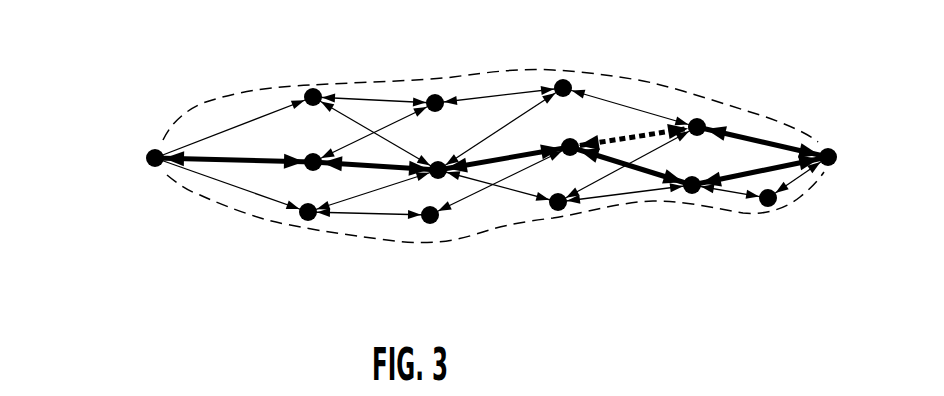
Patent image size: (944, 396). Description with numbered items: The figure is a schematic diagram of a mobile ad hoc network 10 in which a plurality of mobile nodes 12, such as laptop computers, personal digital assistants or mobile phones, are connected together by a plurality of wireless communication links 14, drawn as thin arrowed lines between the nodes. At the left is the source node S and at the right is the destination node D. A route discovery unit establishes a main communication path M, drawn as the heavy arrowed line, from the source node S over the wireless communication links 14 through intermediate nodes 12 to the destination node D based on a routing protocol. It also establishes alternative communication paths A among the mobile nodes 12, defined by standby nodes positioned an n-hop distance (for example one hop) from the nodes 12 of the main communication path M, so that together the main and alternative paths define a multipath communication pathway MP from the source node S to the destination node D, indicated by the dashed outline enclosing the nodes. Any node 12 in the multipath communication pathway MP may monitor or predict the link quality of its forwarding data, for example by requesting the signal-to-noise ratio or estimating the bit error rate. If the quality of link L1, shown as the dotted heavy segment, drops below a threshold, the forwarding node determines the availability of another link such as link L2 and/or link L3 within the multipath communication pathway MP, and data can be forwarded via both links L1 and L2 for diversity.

The mobile ad hoc network 10 is at (645, 62).
The mobile node 12 is at (157, 167).
The wireless communication link 14 is at (250, 199).
The source node S is at (155, 148).
The destination node D is at (838, 157).
The alternative communication path A is at (497, 82).
The main communication path M is at (372, 172).
The multipath communication pathway MP is at (330, 237).
The link L1 is at (634, 120).
The link L2 is at (650, 175).
The link L3 is at (733, 180).